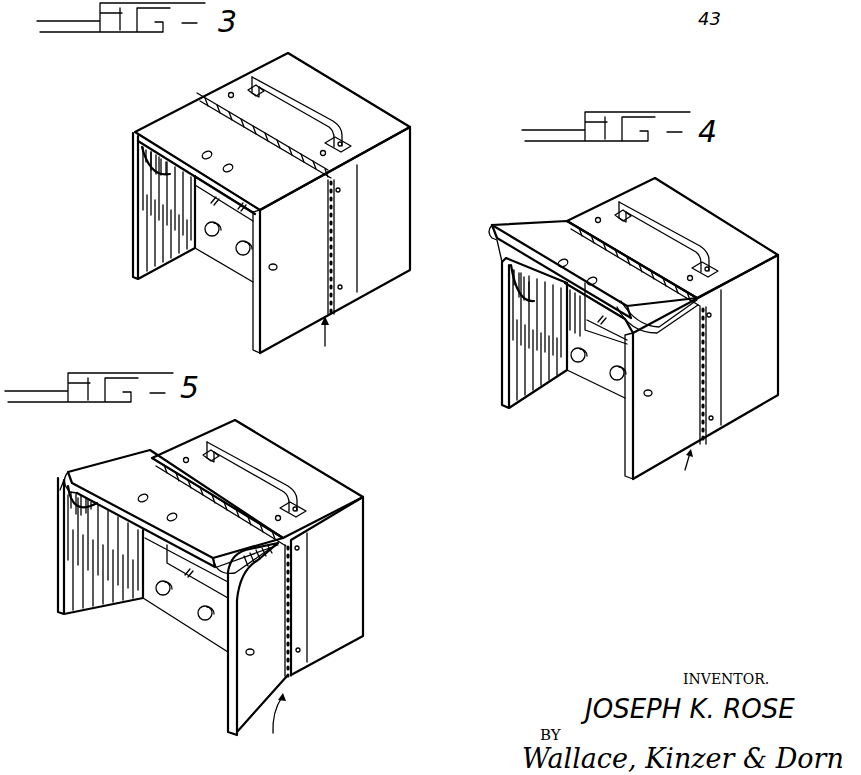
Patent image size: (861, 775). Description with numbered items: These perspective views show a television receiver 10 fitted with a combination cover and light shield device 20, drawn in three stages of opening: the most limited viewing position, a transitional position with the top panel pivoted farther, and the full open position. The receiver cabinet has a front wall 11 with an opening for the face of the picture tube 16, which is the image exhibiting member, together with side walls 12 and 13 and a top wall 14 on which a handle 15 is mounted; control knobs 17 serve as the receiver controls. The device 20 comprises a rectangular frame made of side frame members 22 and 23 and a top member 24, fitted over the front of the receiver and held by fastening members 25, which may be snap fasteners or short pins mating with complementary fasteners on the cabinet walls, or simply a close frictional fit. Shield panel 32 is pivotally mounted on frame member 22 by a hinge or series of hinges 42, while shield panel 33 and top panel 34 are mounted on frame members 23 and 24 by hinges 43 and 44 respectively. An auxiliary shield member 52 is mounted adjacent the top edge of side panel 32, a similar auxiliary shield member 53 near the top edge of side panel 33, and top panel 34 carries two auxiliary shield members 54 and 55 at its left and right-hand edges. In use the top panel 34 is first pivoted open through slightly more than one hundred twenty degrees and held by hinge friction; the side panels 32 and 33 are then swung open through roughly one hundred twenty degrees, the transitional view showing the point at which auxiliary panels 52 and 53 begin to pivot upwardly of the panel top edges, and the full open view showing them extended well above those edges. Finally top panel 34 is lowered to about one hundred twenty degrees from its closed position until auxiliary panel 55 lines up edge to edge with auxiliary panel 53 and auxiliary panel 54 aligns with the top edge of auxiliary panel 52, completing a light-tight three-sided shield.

In FIG. 3, the television receiver 10 is at (349, 78).
In FIG. 4, the television receiver 10 is at (740, 219).
In FIG. 5, the television receiver 10 is at (320, 457).
In FIG. 3, the front wall 11 is at (243, 261).
In FIG. 4, the front wall 11 is at (618, 387).
In FIG. 5, the front wall 11 is at (208, 622).
In FIG. 3, the side wall 12 is at (256, 71).
In FIG. 4, the side wall 12 is at (642, 185).
In FIG. 5, the side wall 12 is at (223, 420).
In FIG. 3, the side wall 13 is at (397, 192).
In FIG. 4, the side wall 13 is at (769, 309).
In FIG. 5, the side wall 13 is at (350, 545).
In FIG. 3, the top wall 14 is at (353, 110).
In FIG. 4, the top wall 14 is at (736, 250).
In FIG. 5, the top wall 14 is at (320, 494).
In FIG. 3, the handle 15 is at (293, 86).
In FIG. 4, the handle 15 is at (673, 220).
In FIG. 5, the handle 15 is at (263, 461).
In FIG. 3, the picture tube 16 is at (224, 229).
In FIG. 4, the picture tube 16 is at (596, 340).
In FIG. 5, the picture tube 16 is at (195, 570).
In FIG. 3, the control knobs 17 is at (210, 236).
In FIG. 4, the control knobs 17 is at (577, 362).
In FIG. 5, the control knobs 17 is at (159, 595).
In FIG. 3, the cover and light shield device 20 is at (322, 343).
In FIG. 4, the cover and light shield device 20 is at (679, 471).
In FIG. 5, the cover and light shield device 20 is at (282, 725).
In FIG. 3, the side frame member 22 is at (217, 91).
In FIG. 4, the side frame member 22 is at (568, 219).
In FIG. 5, the side frame member 22 is at (156, 457).
In FIG. 3, the side frame member 23 is at (343, 219).
In FIG. 4, the side frame member 23 is at (719, 356).
In FIG. 5, the side frame member 23 is at (301, 627).
In FIG. 3, the top member 24 is at (275, 122).
In FIG. 4, the top member 24 is at (652, 256).
In FIG. 5, the top member 24 is at (230, 493).
In FIG. 3, the fastening members 25 is at (232, 92).
In FIG. 4, the fastening members 25 is at (599, 219).
In FIG. 5, the fastening members 25 is at (185, 458).
In FIG. 3, the shield panel 32 is at (134, 205).
In FIG. 4, the shield panel 32 is at (503, 362).
In FIG. 5, the shield panel 32 is at (63, 588).
In FIG. 3, the shield panel 33 is at (301, 298).
In FIG. 4, the shield panel 33 is at (676, 443).
In FIG. 5, the shield panel 33 is at (269, 685).
In FIG. 3, the top panel 34 is at (253, 162).
In FIG. 4, the top panel 34 is at (636, 289).
In FIG. 5, the top panel 34 is at (218, 533).
In FIG. 3, the hinge 42 is at (192, 234).
In FIG. 4, the hinge 42 is at (563, 358).
In FIG. 5, the hinge 42 is at (143, 573).
In FIG. 3, the hinge 43 is at (328, 238).
In FIG. 4, the hinge 43 is at (701, 408).
In FIG. 5, the hinge 43 is at (285, 625).
In FIG. 3, the hinge 44 is at (222, 120).
In FIG. 4, the hinge 44 is at (607, 250).
In FIG. 5, the hinge 44 is at (168, 469).
In FIG. 3, the auxiliary shield member 52 is at (143, 160).
In FIG. 4, the auxiliary shield member 52 is at (514, 283).
In FIG. 5, the auxiliary shield member 52 is at (68, 492).
In FIG. 5, the auxiliary shield member 53 is at (253, 575).
In FIG. 4, the auxiliary shield member 54 is at (536, 229).
In FIG. 5, the auxiliary shield member 54 is at (87, 465).
In FIG. 4, the auxiliary shield member 55 is at (657, 328).
In FIG. 5, the auxiliary shield member 55 is at (257, 549).